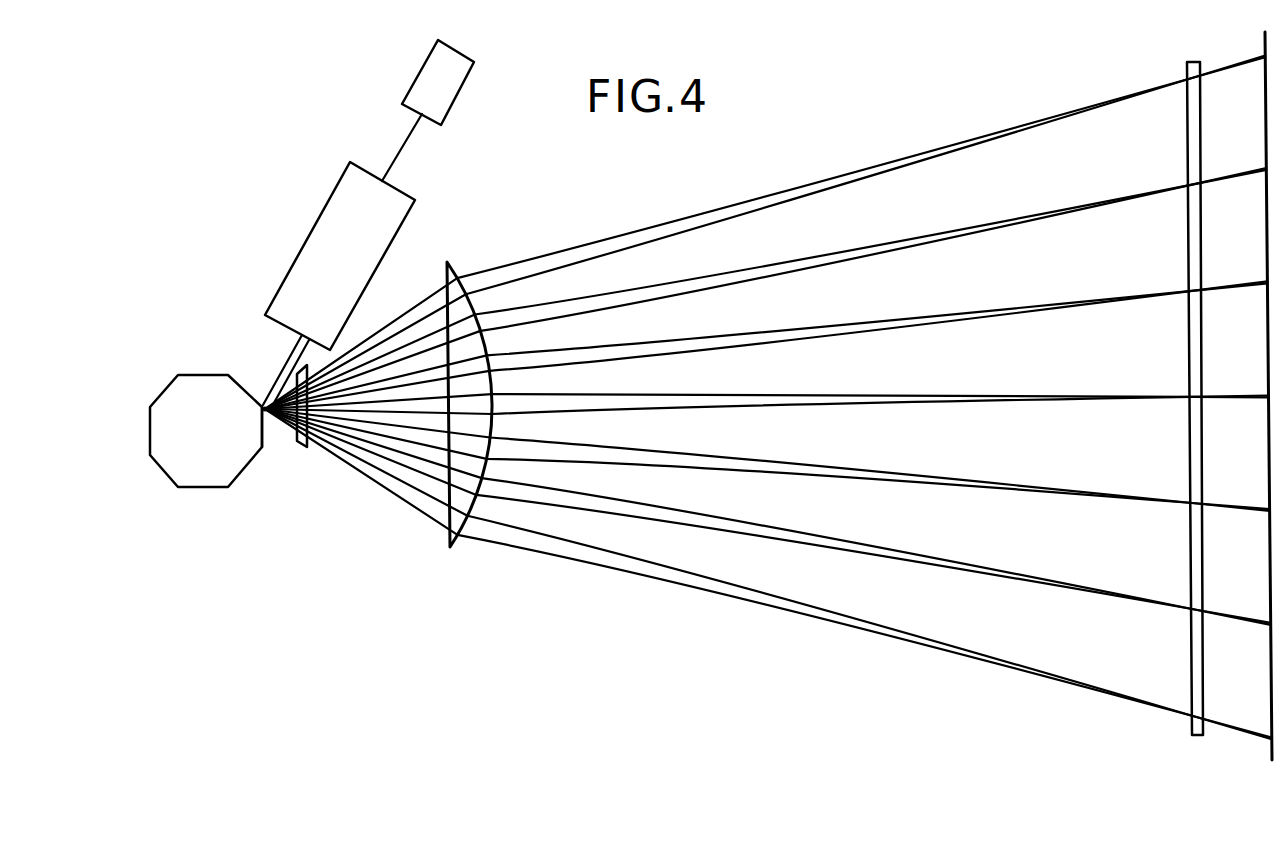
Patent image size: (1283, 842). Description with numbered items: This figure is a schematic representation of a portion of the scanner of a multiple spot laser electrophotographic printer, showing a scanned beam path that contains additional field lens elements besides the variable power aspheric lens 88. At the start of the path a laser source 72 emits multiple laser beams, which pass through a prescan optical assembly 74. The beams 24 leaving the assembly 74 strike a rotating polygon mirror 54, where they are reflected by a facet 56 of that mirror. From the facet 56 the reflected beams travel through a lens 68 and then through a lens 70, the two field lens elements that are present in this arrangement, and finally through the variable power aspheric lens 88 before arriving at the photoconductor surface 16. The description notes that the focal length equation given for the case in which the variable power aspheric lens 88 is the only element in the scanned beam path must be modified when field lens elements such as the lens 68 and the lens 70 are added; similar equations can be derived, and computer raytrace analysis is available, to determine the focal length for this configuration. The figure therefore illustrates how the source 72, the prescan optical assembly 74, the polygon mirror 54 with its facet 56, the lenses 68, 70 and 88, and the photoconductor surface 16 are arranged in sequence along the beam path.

The photoconductor surface 16 is at (1265, 45).
The beams 24 is at (262, 372).
The rotating polygon mirror 54 is at (222, 447).
The facet 56 is at (267, 445).
The lens 68 is at (302, 451).
The lens 70 is at (456, 538).
The laser source 72 is at (458, 84).
The prescan optical assembly 74 is at (313, 237).
The variable power aspheric lens 88 is at (1188, 722).